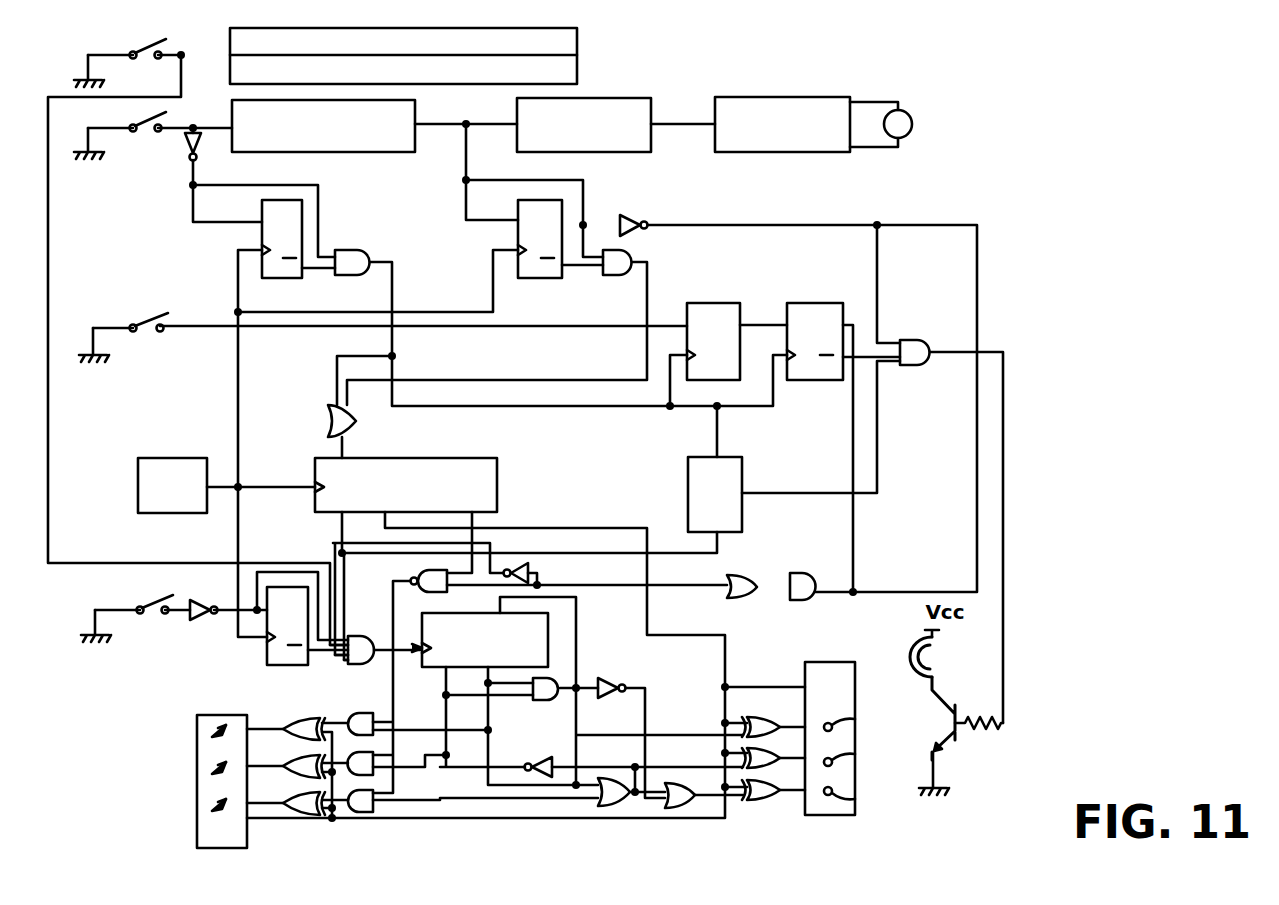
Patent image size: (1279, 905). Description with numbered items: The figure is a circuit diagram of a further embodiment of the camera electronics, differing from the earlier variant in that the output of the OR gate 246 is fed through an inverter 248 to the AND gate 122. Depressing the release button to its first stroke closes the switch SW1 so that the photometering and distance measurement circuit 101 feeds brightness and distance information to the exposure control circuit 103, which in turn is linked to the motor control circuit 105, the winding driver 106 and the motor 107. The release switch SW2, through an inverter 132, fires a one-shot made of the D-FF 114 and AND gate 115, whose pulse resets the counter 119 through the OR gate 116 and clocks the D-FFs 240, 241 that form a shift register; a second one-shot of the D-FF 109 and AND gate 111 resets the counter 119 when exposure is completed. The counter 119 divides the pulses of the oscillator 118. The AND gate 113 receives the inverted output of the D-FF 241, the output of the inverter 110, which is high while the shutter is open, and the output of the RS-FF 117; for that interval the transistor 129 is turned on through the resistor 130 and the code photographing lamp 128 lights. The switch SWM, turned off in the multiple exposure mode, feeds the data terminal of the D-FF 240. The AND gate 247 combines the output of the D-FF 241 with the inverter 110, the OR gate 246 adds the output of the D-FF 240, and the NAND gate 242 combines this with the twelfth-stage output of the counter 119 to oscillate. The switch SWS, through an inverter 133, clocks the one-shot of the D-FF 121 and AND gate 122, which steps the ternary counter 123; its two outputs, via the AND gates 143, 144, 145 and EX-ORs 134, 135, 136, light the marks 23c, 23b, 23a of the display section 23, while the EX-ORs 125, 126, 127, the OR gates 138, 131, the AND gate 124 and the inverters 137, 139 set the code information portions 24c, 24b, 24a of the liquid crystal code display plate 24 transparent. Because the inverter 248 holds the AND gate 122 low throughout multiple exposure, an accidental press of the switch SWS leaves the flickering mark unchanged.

The photometering and distance measurement circuit 101 is at (577, 33).
The exposure control circuit 103 is at (355, 152).
The motor control circuit 105 is at (625, 98).
The winding driver 106 is at (780, 97).
The motor 107 is at (912, 124).
The D-type flip-flop 109 is at (540, 278).
The inverter 110 is at (637, 212).
The AND gate 111 is at (616, 275).
The AND gate 113 is at (915, 340).
The D-type flip-flop 114 is at (285, 278).
The AND gate 115 is at (355, 250).
The OR gate 116 is at (356, 420).
The RS flip-flop 117 is at (700, 457).
The oscillator 118 is at (178, 458).
The counter 119 is at (470, 458).
The D-type flip-flop 121 is at (283, 587).
The AND gate 122 is at (355, 636).
The ternary counter 123 is at (548, 632).
The AND gate 124 is at (553, 700).
The exclusive-OR gate 125 is at (747, 715).
The exclusive-OR gate 126 is at (772, 768).
The exclusive-OR gate 127 is at (762, 803).
The code photographing lamp 128 is at (936, 660).
The transistor 129 is at (950, 745).
The resistor 130 is at (985, 733).
The OR gate 131 is at (675, 808).
The inverter 132 is at (201, 148).
The inverter 133 is at (200, 622).
The exclusive-OR gate 134 is at (296, 718).
The exclusive-OR gate 135 is at (286, 758).
The exclusive-OR gate 136 is at (286, 812).
The inverter 137 is at (610, 676).
The OR gate 138 is at (612, 806).
The inverter 139 is at (540, 757).
The AND gate 143 is at (355, 713).
The AND gate 144 is at (363, 752).
The AND gate 145 is at (362, 812).
The D-type flip-flop 240 is at (706, 303).
The D-type flip-flop 241 is at (808, 303).
The NAND gate 242 is at (421, 572).
The OR gate 246 is at (752, 598).
The AND gate 247 is at (803, 573).
The inverter 248 is at (533, 567).
The pseudo telescopic focal length display section 23 is at (197, 835).
The mark 23a is at (197, 803).
The mark 23b is at (197, 766).
The mark 23c is at (197, 729).
The liquid crystal code display plate 24 is at (836, 662).
The code information portion 24a is at (855, 800).
The code information portion 24b is at (855, 754).
The code information portion 24c is at (855, 719).
The photometry and distance measurement switch SW1 is at (140, 64).
The release switch SW2 is at (140, 138).
The multiple exposure switch SWM is at (150, 309).
The pseudo telescopic code selection switch SWS is at (165, 593).